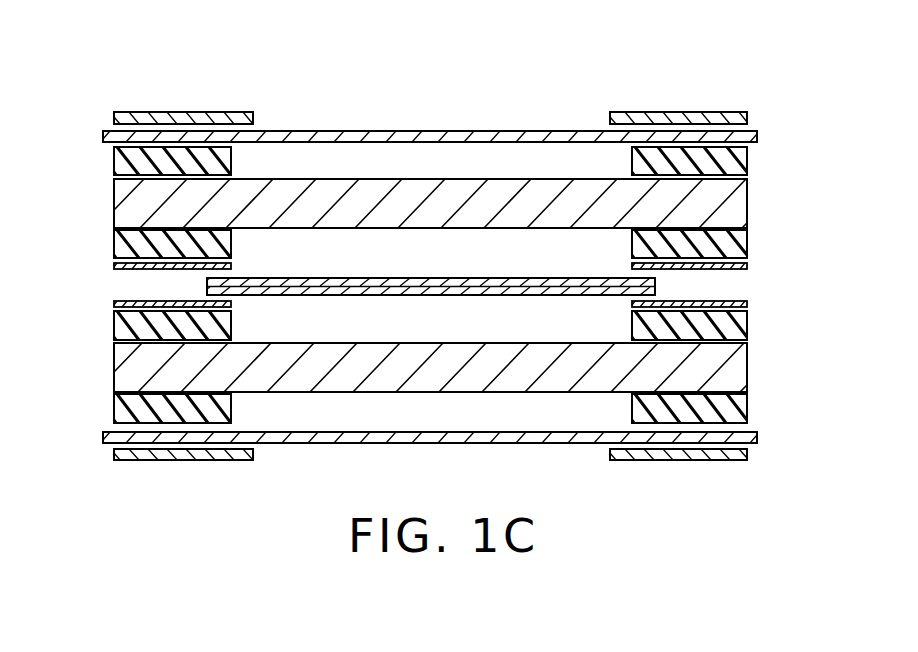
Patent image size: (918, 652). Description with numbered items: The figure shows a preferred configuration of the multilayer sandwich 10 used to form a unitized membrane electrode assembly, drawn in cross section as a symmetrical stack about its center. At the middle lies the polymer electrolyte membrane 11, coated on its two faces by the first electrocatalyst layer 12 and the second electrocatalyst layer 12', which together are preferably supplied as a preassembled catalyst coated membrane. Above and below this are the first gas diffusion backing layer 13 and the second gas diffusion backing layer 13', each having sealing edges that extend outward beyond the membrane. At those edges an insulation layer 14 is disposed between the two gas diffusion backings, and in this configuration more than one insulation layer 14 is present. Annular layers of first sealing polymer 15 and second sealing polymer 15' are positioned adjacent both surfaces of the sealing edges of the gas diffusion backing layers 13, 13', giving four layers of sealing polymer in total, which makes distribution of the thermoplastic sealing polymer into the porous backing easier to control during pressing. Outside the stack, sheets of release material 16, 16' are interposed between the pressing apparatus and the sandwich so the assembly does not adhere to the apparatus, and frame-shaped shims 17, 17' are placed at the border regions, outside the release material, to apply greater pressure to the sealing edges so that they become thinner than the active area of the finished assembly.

The multilayer sandwich 10 is at (279, 46).
The polymer electrolyte membrane 11 is at (205, 287).
The first electrocatalyst layer 12 is at (342, 269).
The second electrocatalyst layer 12' is at (342, 313).
The first gas diffusion backing layer 13 is at (464, 203).
The second gas diffusion backing layer 13' is at (466, 367).
The insulation layer 14 is at (747, 266).
The first sealing polymer 15 is at (464, 202).
The second sealing polymer 15' is at (466, 367).
The release material 16 is at (458, 137).
The release material 16' is at (461, 437).
The shim 17 is at (464, 116).
The shim 17' is at (466, 456).